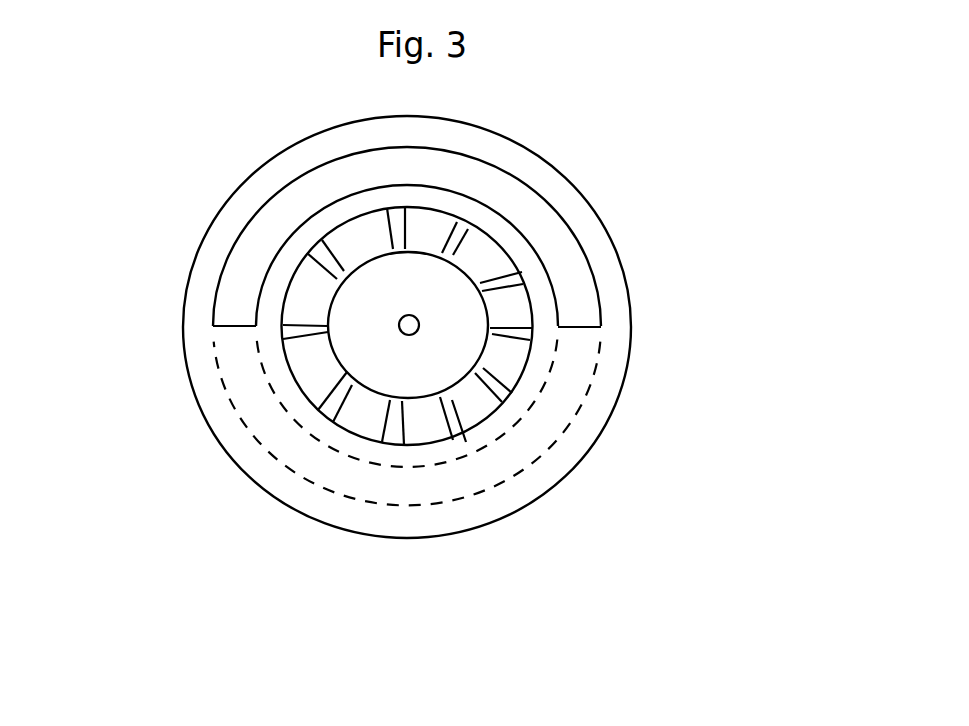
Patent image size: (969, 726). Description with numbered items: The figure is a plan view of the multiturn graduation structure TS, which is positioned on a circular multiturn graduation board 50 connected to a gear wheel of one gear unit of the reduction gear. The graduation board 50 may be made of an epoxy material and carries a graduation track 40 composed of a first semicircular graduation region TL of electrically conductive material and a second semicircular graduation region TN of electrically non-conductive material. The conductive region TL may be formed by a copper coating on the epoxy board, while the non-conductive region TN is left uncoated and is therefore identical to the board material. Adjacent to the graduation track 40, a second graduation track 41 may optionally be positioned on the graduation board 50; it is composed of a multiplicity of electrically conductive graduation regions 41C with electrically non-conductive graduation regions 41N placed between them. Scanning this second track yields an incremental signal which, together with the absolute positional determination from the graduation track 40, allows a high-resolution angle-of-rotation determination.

The multiturn graduation board 50 is at (628, 285).
The graduation track 40 is at (312, 463).
The second graduation track 41 is at (393, 443).
The electrically conductive graduation region 41C is at (441, 444).
The electrically non-conductive graduation region 41N is at (458, 423).
The first semicircular graduation region TL is at (527, 213).
The second semicircular graduation region TN is at (537, 438).
The graduation structure TS is at (176, 437).